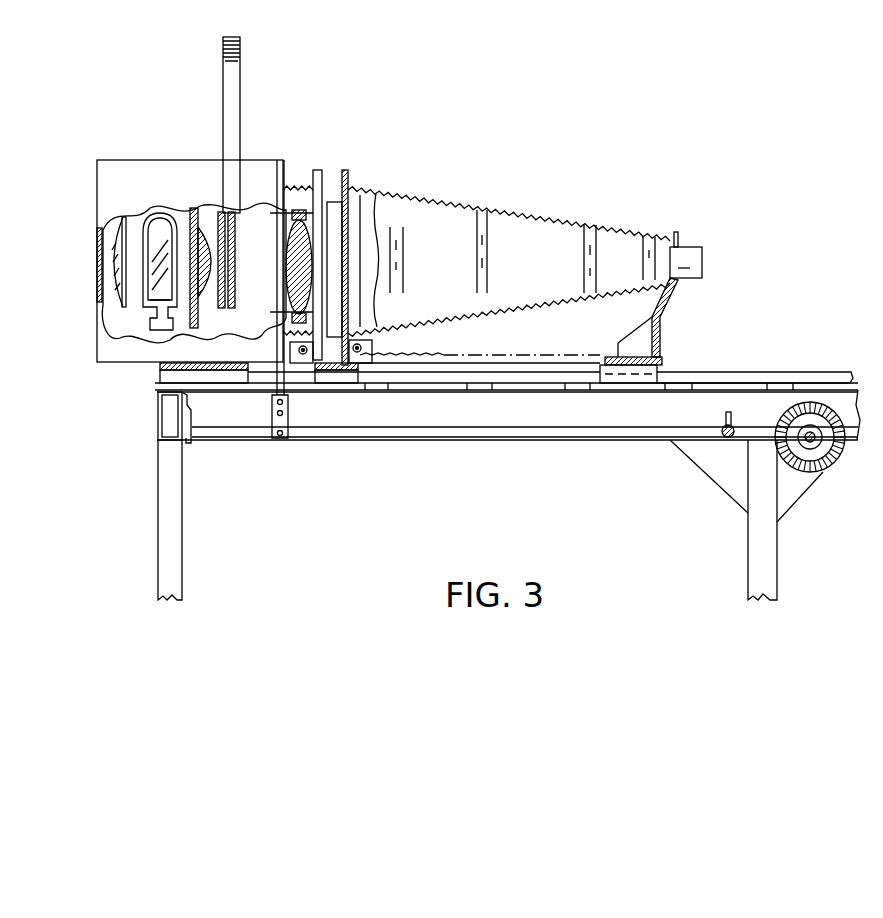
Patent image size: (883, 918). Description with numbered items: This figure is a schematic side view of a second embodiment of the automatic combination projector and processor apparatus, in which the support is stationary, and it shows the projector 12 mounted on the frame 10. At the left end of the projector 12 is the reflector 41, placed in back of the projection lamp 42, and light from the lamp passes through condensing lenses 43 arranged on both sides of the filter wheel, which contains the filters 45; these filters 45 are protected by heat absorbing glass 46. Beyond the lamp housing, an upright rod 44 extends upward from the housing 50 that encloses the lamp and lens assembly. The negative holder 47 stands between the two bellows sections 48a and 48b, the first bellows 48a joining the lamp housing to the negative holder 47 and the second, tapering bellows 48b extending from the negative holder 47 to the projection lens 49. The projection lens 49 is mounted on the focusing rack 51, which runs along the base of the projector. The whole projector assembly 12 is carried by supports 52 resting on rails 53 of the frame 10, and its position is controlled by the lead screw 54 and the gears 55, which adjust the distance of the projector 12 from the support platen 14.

The frame 10 is at (165, 508).
The projector 12 is at (445, 271).
The support platen 14 is at (665, 376).
The reflector 41 is at (97, 257).
The projection lamp 42 is at (167, 230).
The condensing lenses 43 is at (207, 242).
The handle rod 44 is at (233, 116).
The filters 45 is at (233, 300).
The heat absorbing glass 46 is at (221, 300).
The negative holder 47 is at (331, 200).
The bellows 48a is at (299, 183).
The bellows 48b is at (462, 212).
The projection lens 49 is at (696, 253).
The lamp housing 50 is at (97, 354).
The focusing rack 51 is at (527, 358).
The supports 52 is at (160, 380).
The rails 53 is at (760, 376).
The lead screw 54 is at (697, 434).
The gears 55 is at (780, 430).